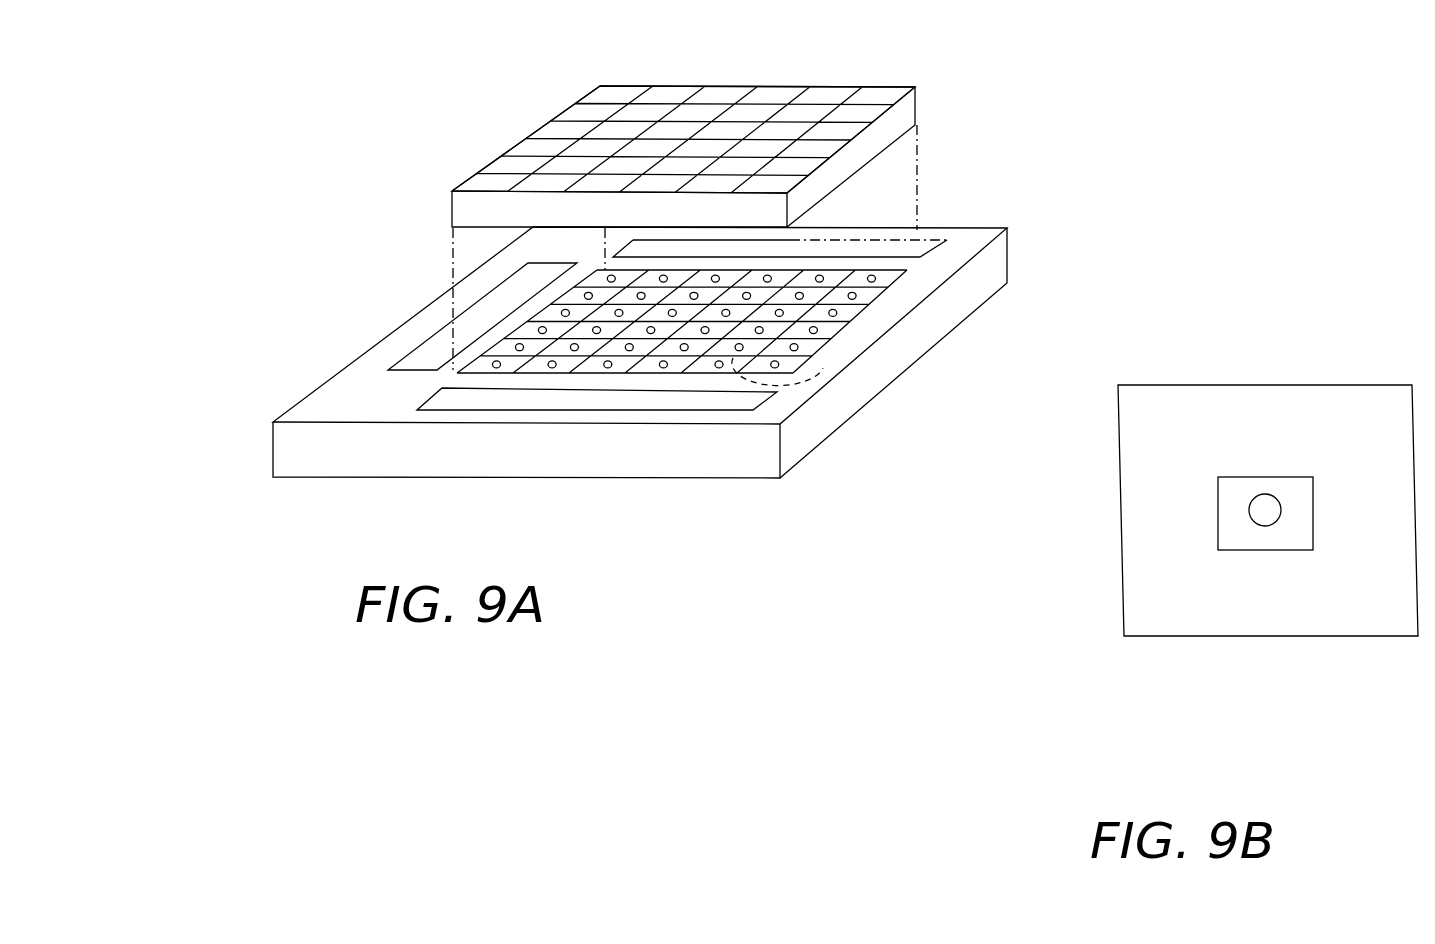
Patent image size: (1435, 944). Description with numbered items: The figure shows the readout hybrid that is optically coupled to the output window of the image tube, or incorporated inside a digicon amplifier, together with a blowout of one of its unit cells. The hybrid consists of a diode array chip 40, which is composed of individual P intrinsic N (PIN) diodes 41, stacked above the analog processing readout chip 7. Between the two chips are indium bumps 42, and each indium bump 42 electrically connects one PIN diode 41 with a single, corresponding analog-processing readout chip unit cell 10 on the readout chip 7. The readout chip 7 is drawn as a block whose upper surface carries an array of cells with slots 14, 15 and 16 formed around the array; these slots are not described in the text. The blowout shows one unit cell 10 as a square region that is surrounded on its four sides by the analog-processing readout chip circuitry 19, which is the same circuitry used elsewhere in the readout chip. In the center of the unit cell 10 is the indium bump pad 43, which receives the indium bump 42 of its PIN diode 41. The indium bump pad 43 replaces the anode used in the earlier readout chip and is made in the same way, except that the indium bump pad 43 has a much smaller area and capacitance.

In FIG. 9A, the analog processing readout chip 7 is at (256, 450).
In FIG. 9A, the diode array chip 40 is at (737, 219).
In FIG. 9A, the PIN diode 41 is at (799, 160).
In FIG. 9A, the slot 14 is at (894, 239).
In FIG. 9A, the indium bump 42 is at (909, 266).
In FIG. 9B, the indium bump 42 is at (1259, 492).
In FIG. 9A, the slot 15 is at (430, 338).
In FIG. 9A, the slot 16 is at (563, 415).
In FIG. 9B, the analog-processing readout chip unit cell 10 is at (1254, 368).
In FIG. 9B, the circuitry 19 is at (1212, 617).
In FIG. 9B, the indium bump pad 43 is at (1308, 561).